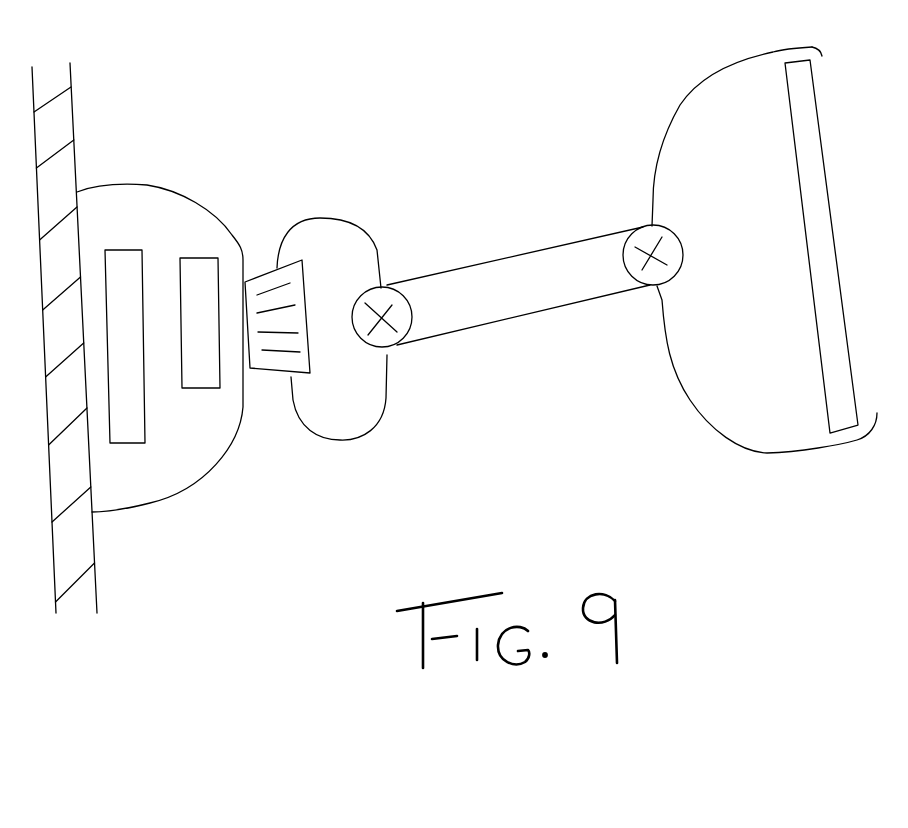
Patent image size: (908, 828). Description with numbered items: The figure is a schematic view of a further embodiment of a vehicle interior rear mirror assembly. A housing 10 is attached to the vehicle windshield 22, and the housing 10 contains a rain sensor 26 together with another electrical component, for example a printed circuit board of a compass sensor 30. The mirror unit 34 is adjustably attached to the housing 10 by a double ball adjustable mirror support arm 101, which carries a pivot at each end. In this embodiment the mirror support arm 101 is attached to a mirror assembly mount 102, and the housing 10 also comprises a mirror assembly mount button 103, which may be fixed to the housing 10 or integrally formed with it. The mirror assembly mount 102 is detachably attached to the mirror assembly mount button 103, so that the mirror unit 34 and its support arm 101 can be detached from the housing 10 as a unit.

The housing 10 is at (180, 167).
The vehicle windshield 22 is at (63, 108).
The rain sensor 26 is at (130, 432).
The compass sensor 30 is at (205, 375).
The mirror unit 34 is at (775, 435).
The mirror support arm 101 is at (490, 320).
The mirror assembly mount 102 is at (350, 232).
The mirror assembly mount button 103 is at (267, 286).